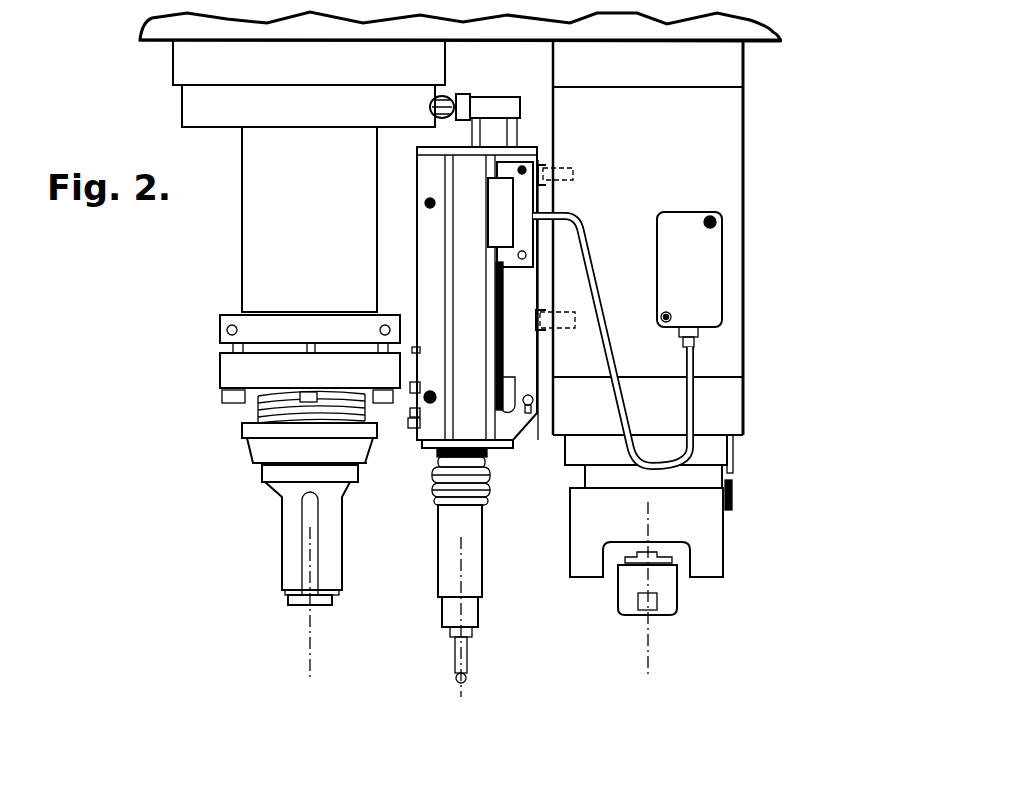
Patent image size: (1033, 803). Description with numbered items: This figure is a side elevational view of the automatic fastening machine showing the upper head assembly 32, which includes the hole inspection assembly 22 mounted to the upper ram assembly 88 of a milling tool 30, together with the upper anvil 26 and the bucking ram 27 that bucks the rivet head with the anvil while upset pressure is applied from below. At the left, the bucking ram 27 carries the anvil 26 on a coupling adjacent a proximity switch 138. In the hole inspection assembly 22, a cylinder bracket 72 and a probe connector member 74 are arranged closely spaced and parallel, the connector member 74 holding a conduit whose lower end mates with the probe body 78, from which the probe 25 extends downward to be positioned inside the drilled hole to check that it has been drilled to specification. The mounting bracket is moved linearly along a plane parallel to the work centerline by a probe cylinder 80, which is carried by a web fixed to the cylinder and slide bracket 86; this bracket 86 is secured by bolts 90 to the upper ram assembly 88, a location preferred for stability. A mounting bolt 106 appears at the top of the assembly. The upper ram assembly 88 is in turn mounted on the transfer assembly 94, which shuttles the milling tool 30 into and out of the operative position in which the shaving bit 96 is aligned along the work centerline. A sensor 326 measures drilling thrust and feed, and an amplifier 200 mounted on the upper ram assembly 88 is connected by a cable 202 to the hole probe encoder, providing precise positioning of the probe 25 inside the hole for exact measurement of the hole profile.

The hole inspection assembly 22 is at (595, 150).
The probe 25 is at (442, 654).
The upper anvil 26 is at (282, 523).
The bucking ram 27 is at (258, 237).
The milling tool 30 is at (700, 587).
The upper head assembly 32 is at (195, 160).
The cylinder bracket 72 is at (403, 383).
The probe connector member 74 is at (408, 417).
The probe body 78 is at (447, 530).
The probe cylinder 80 is at (500, 128).
The cylinder and slide bracket 86 is at (548, 277).
The upper ram assembly 88 is at (732, 160).
The bolts 90 is at (560, 168).
The transfer assembly 94 is at (762, 40).
The shaving bit 96 is at (622, 590).
The mounting bolt 106 is at (515, 67).
The first proximity switch 138 is at (408, 363).
The amplifier 200 is at (708, 277).
The cable 202 is at (603, 327).
The sensor 326 is at (500, 202).